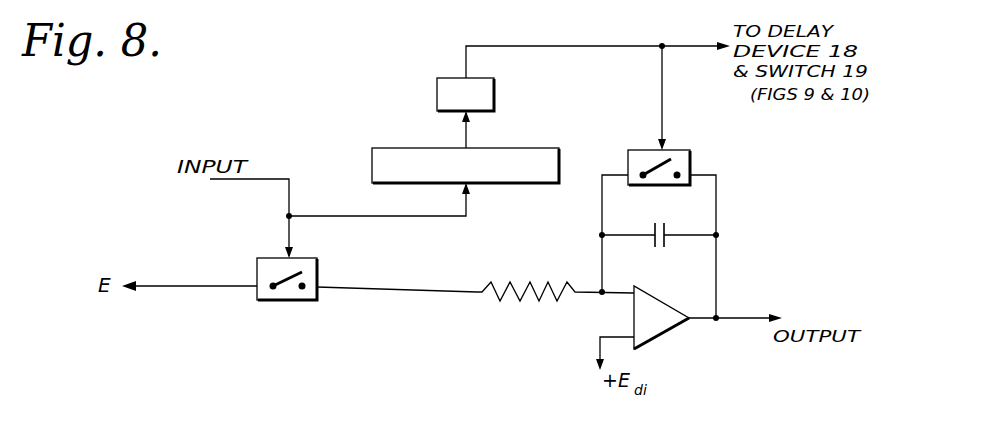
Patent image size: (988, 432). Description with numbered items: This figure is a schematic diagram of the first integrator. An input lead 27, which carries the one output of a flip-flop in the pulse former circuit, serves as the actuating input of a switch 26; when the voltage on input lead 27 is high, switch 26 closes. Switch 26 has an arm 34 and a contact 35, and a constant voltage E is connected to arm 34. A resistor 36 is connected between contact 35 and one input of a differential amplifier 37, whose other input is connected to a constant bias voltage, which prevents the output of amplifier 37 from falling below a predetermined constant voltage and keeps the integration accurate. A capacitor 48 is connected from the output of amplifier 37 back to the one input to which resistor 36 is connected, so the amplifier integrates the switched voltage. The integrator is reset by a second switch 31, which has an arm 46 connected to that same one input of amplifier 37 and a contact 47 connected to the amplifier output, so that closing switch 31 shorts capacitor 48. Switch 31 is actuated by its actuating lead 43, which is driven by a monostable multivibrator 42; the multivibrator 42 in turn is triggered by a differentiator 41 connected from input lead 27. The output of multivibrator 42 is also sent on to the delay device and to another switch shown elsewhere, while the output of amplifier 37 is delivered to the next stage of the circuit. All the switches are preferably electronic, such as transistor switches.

The switch 26 is at (278, 305).
The input lead 27 is at (263, 176).
The switch 31 is at (684, 145).
The arm 34 is at (286, 275).
The contact 35 is at (302, 292).
The resistor 36 is at (540, 283).
The differential amplifier 37 is at (663, 333).
The differentiator 41 is at (381, 148).
The monostable multivibrator 42 is at (494, 97).
The actuating lead 43 is at (664, 90).
The arm 46 is at (645, 167).
The contact 47 is at (681, 174).
The capacitor 48 is at (663, 247).